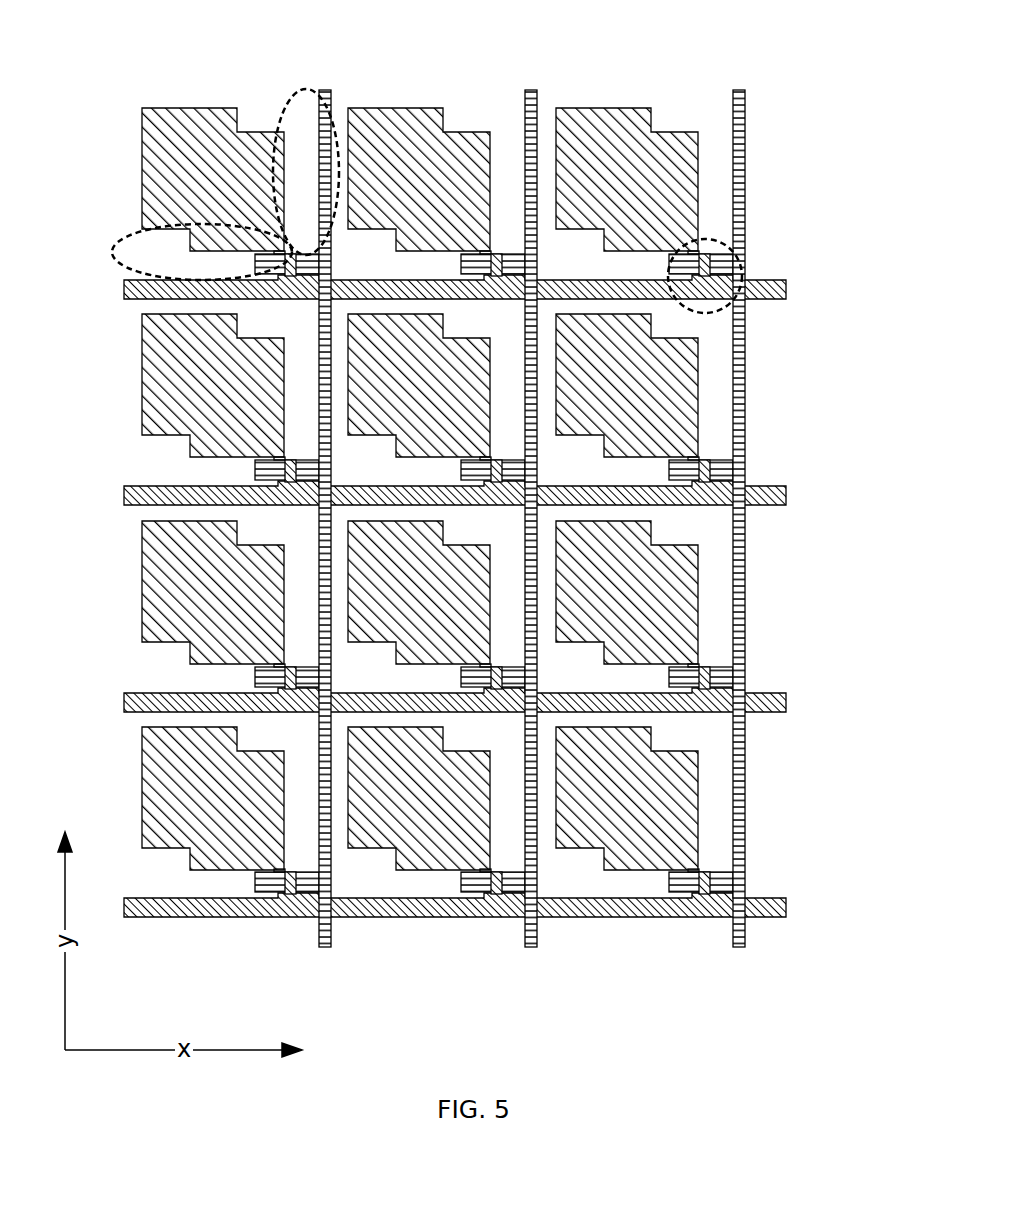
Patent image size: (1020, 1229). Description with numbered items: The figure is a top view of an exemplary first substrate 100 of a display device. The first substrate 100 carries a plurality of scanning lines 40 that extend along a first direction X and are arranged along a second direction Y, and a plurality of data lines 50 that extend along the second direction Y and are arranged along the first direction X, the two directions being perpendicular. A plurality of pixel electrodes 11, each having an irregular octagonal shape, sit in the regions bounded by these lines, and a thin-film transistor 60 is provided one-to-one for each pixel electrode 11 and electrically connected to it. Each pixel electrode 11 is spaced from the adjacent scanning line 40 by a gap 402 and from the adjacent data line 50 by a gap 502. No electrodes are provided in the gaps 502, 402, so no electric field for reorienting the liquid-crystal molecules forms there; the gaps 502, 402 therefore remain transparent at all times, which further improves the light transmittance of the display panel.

The first substrate 100 is at (762, 31).
The pixel electrode 11 is at (420, 469).
The data line 50 is at (576, 518).
The scanning line 40 is at (497, 596).
The gap 502 is at (364, 158).
The gap 402 is at (118, 236).
The thin-film transistor 60 is at (751, 262).